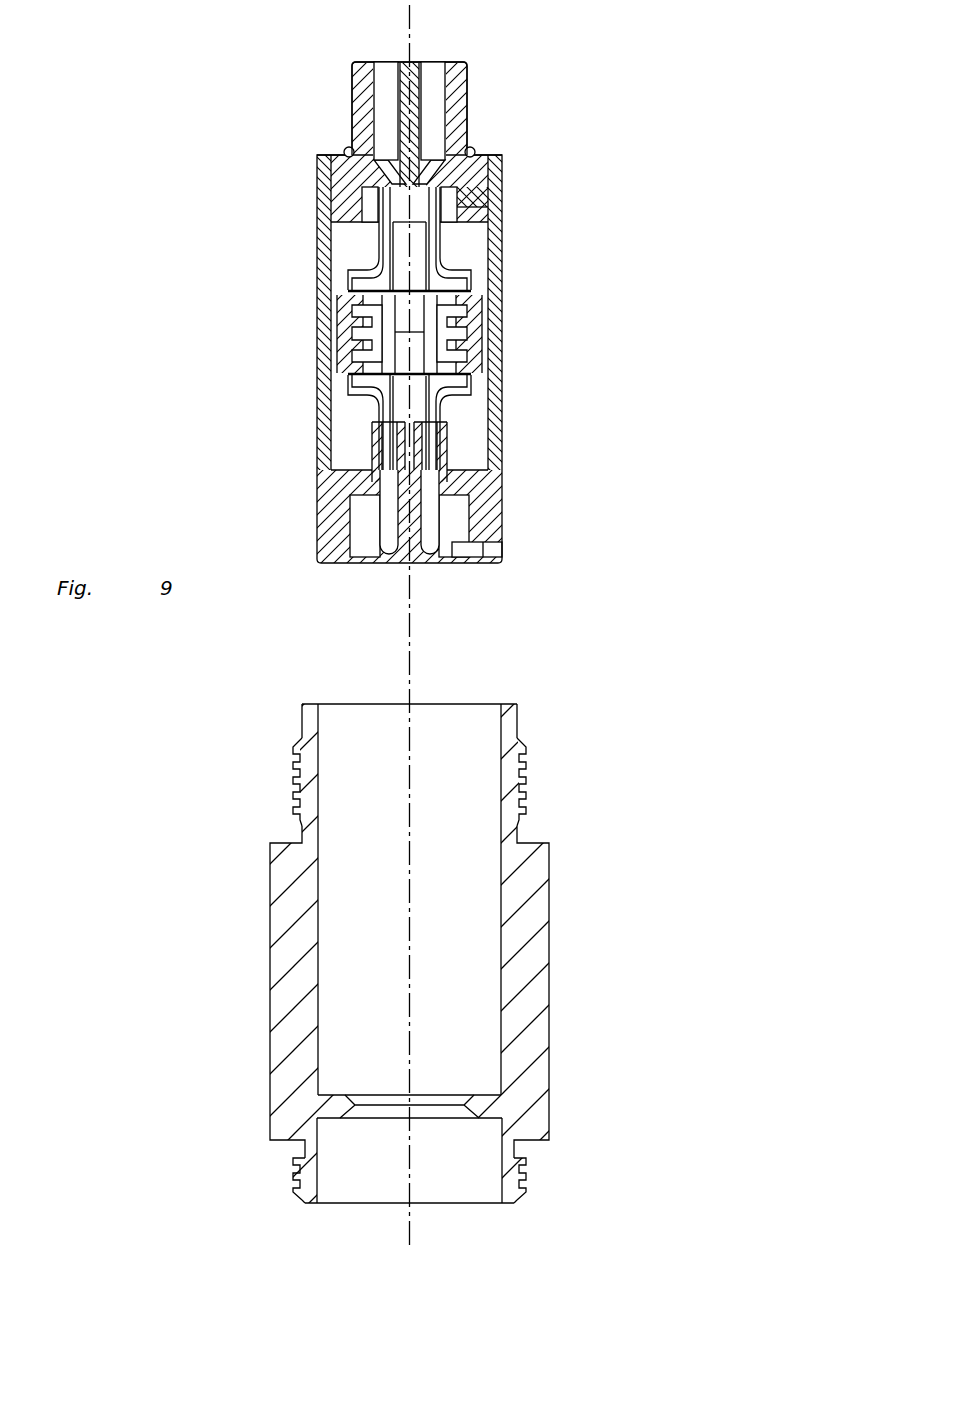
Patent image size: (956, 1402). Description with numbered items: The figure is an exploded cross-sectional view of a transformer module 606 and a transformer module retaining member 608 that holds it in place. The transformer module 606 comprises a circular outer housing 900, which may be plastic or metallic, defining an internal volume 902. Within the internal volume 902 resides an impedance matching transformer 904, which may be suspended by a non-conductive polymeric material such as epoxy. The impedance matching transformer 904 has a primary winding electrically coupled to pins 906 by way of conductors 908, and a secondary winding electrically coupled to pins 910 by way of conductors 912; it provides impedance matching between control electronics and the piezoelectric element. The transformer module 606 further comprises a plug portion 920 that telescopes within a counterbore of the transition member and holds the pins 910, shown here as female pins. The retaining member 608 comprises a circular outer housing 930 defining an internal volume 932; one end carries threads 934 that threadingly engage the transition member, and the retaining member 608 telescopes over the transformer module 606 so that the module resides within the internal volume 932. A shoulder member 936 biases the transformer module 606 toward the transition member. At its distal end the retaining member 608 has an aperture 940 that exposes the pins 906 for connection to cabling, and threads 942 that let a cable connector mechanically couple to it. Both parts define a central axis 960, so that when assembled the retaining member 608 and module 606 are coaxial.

The transformer module 606 is at (178, 208).
The transformer module retaining member 608 is at (178, 876).
The circular outer housing 900 is at (497, 482).
The internal volume 902 is at (472, 440).
The impedance matching transformer 904 is at (420, 328).
The pins 906 is at (385, 540).
The conductors 908 is at (345, 392).
The pins 910 is at (387, 72).
The conductors 912 is at (345, 274).
The plug portion 920 is at (320, 90).
The circular outer housing 930 is at (548, 912).
The internal volume 932 is at (470, 929).
The threads 934 is at (294, 775).
The shoulder member 936 is at (483, 1093).
The aperture 940 is at (358, 1182).
The threads 942 is at (522, 1168).
The central axis 960 is at (412, 657).